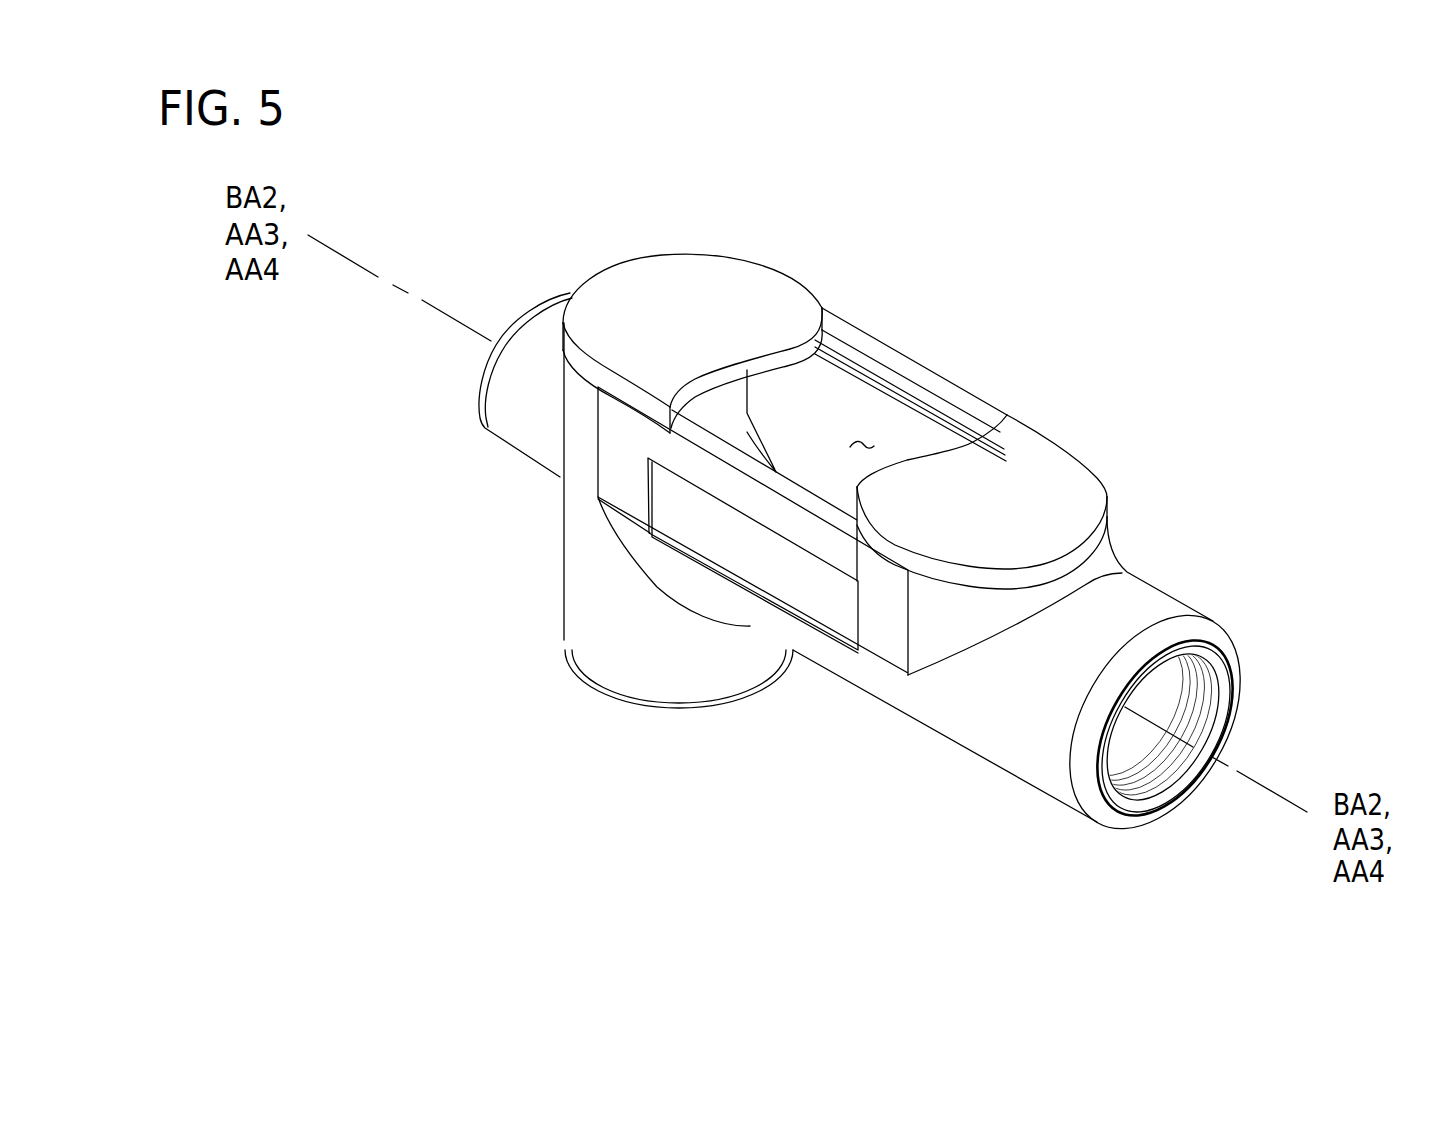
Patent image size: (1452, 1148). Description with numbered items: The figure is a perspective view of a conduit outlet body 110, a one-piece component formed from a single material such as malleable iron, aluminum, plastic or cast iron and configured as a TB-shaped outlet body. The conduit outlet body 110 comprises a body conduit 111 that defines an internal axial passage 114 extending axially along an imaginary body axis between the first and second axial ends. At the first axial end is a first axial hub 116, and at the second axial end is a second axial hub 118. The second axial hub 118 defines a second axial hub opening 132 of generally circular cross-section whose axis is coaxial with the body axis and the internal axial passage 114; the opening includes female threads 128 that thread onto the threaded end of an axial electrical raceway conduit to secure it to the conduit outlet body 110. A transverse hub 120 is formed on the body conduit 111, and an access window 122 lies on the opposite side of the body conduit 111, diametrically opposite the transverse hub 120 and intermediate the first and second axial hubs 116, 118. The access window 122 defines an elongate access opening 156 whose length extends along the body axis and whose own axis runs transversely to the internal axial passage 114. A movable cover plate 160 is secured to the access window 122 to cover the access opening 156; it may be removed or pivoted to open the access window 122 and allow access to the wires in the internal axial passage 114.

The conduit outlet body 110 is at (1155, 258).
The body conduit 111 is at (874, 678).
The internal axial passage 114 is at (850, 447).
The first axial hub 116 is at (484, 426).
The second axial hub 118 is at (1104, 819).
The transverse hub 120 is at (587, 680).
The access window 122 is at (868, 368).
The female threads 128 is at (1207, 709).
The second axial hub opening 132 is at (1143, 760).
The access opening 156 is at (789, 482).
The cover plate 160 is at (722, 294).